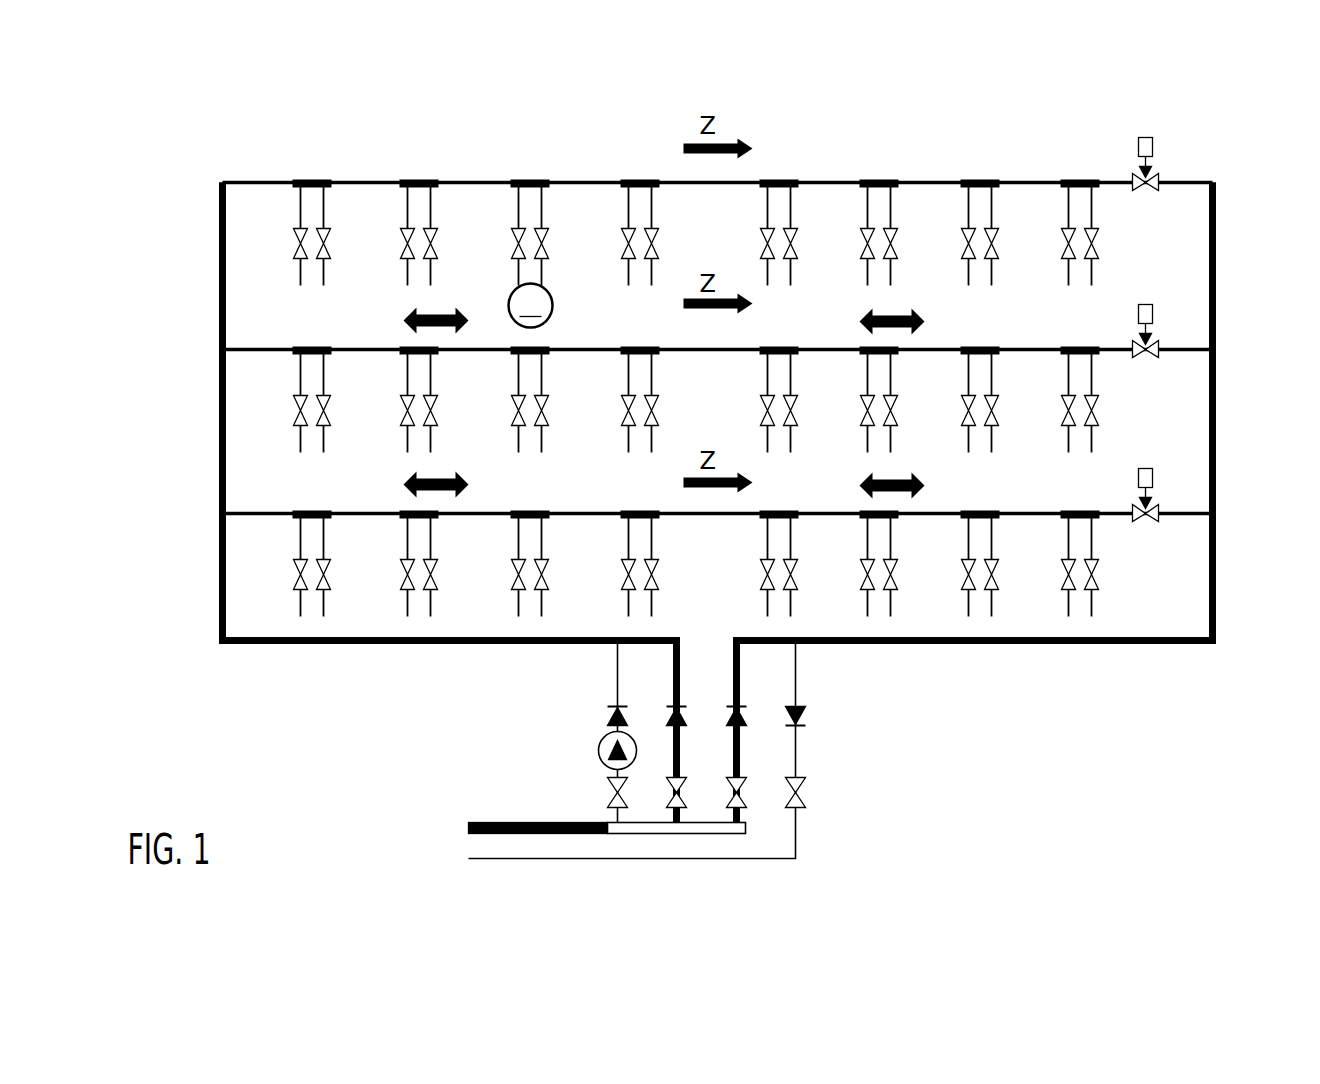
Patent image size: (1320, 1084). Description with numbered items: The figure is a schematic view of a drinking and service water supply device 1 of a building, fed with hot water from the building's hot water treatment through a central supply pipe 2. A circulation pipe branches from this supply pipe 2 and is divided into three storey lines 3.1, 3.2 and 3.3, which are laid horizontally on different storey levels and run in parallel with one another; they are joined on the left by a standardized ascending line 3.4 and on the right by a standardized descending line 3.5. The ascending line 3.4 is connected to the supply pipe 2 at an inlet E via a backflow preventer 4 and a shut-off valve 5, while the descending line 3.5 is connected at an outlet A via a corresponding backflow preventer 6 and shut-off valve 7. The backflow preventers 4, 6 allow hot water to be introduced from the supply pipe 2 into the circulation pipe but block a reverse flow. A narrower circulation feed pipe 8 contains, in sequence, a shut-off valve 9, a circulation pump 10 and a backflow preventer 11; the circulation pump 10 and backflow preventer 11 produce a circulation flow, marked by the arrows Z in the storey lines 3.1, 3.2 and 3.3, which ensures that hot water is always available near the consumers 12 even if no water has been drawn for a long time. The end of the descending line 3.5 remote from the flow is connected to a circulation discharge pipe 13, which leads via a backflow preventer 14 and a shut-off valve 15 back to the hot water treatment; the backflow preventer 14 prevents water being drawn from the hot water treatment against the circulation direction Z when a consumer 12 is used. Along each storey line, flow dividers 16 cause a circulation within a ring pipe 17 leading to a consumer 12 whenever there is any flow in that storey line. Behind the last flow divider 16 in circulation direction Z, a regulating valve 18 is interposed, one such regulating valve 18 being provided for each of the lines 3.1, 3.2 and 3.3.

The drinking and service water supply device 1 is at (985, 143).
The central supply pipe 2 is at (494, 821).
The storey line 3.1 is at (249, 511).
The storey line 3.2 is at (249, 347).
The storey line 3.3 is at (249, 180).
The ascending line 3.4 is at (219, 402).
The descending line 3.5 is at (1216, 401).
The backflow preventer 4 is at (683, 697).
The shut-off valve 5 is at (688, 813).
The backflow preventer 6 is at (729, 698).
The shut-off valve 7 is at (748, 813).
The circulation feed pipe 8 is at (616, 668).
The shut-off valve 9 is at (606, 792).
The circulation pump 10 is at (599, 750).
The backflow preventer 11 is at (606, 716).
The consumer 12 is at (531, 306).
The circulation discharge pipe 13 is at (797, 750).
The backflow preventer 14 is at (805, 715).
The shut-off valve 15 is at (805, 792).
The flow divider 16 is at (512, 180).
The ring pipe 17 is at (549, 208).
The regulating valve 18 is at (1155, 142).
The inlet E is at (668, 632).
The outlet A is at (756, 668).